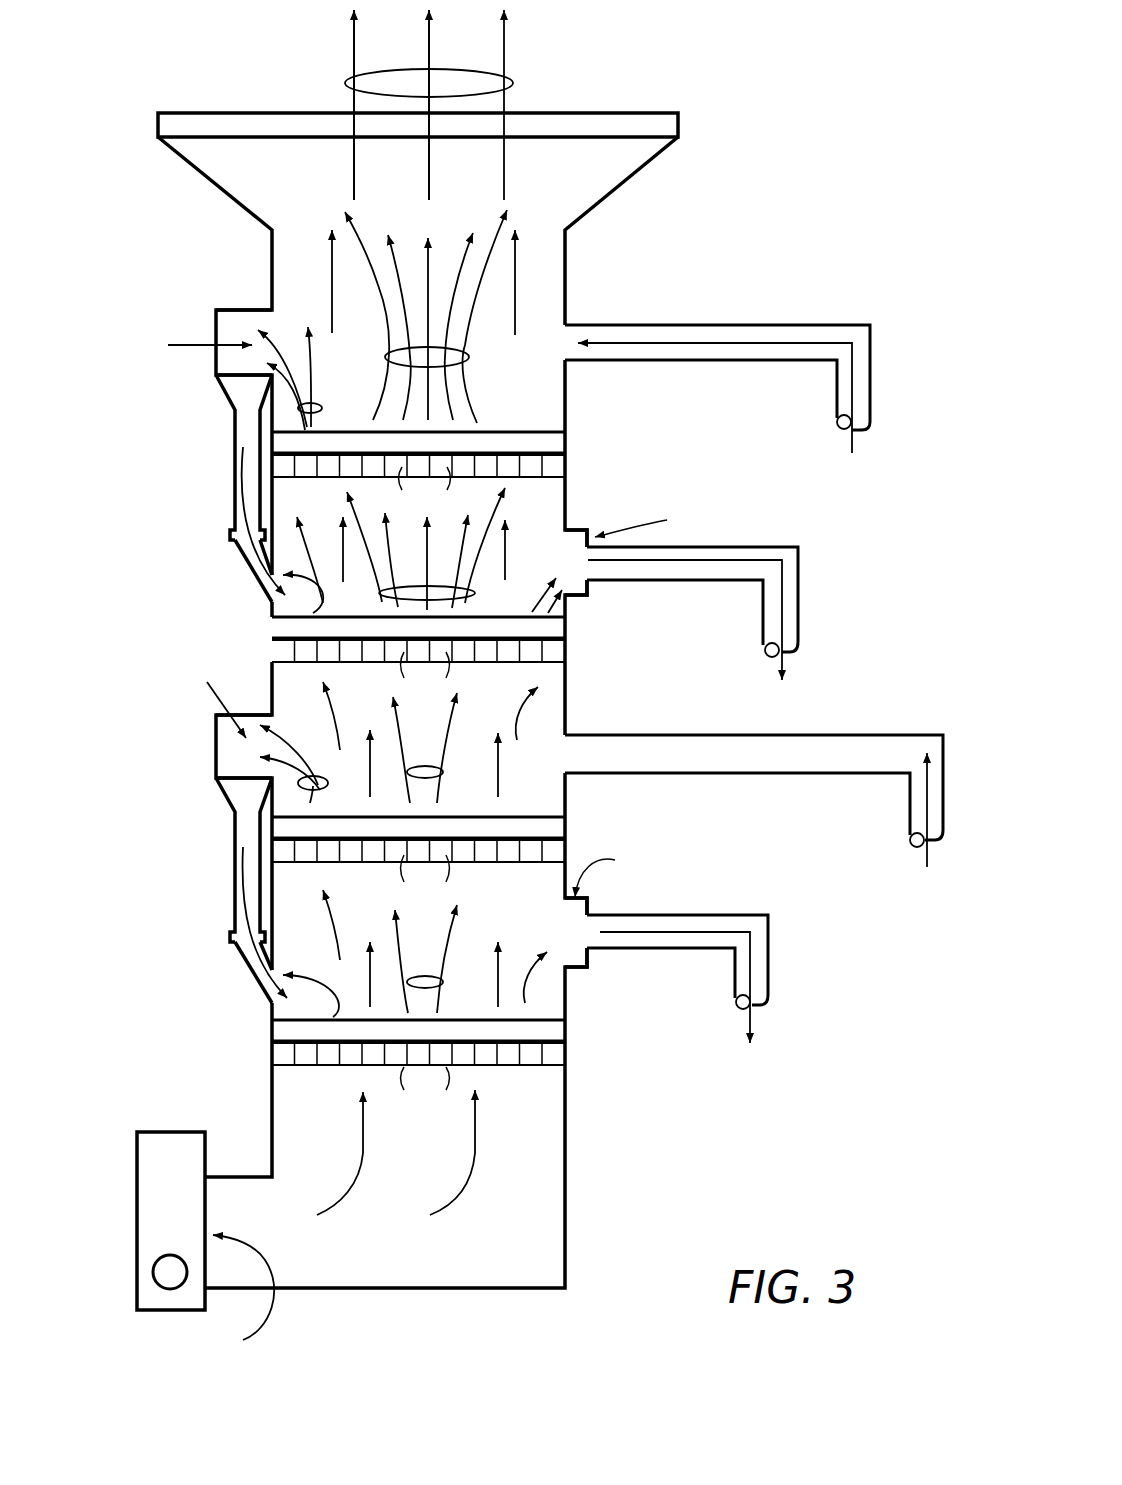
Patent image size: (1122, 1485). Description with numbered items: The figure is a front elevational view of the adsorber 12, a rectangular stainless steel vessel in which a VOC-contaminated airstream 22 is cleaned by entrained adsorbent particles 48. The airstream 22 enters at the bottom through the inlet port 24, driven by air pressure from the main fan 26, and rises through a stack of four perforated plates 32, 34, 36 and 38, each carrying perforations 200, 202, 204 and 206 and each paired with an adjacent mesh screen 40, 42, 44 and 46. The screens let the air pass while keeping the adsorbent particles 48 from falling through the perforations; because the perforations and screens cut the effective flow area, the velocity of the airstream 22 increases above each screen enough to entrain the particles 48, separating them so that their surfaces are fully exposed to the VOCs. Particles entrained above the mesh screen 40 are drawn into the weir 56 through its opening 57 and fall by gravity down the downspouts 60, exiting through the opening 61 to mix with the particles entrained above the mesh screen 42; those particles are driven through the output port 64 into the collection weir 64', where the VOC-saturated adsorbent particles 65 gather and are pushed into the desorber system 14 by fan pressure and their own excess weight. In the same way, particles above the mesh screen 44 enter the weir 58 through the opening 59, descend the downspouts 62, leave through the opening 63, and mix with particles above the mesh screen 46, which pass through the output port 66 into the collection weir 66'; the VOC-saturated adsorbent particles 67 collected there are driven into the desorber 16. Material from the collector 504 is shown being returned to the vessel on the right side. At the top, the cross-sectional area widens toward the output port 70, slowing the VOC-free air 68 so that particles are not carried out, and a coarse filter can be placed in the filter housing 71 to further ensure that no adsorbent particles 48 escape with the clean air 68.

The adsorber 12 is at (574, 260).
The VOC-contaminated airstream 22 is at (334, 308).
The inlet port 24 is at (243, 1296).
The main fan 26 is at (165, 1132).
The perforated plate 32 is at (545, 468).
The perforated plate 34 is at (548, 660).
The perforated plate 36 is at (557, 852).
The perforated plate 38 is at (560, 1055).
The mesh screen 40 is at (547, 432).
The mesh screen 42 is at (567, 612).
The mesh screen 44 is at (535, 817).
The mesh screen 46 is at (543, 1020).
The adsorbent particles 48 is at (322, 408).
The weir 56 is at (216, 322).
The opening 57 is at (193, 327).
The weir 58 is at (215, 748).
The opening 59 is at (212, 697).
The downspouts 60 is at (232, 478).
The opening 61 is at (307, 617).
The downspouts 62 is at (232, 878).
The opening 63 is at (320, 1021).
The output port 64 is at (614, 545).
The collection weir 64' is at (648, 523).
The VOC-saturated adsorbent particles 65 is at (780, 588).
The output port 66 is at (631, 921).
The collection weir 66' is at (613, 871).
The VOC-saturated adsorbent particles 67 is at (757, 957).
The VOC-free air 68 is at (513, 83).
The output port 70 is at (557, 113).
The filter housing 71 is at (657, 127).
The perforations 200 is at (425, 486).
The perforations 202 is at (425, 672).
The perforations 204 is at (425, 876).
The perforations 206 is at (425, 1089).
The collector 504 is at (770, 632).
The desorber system 14 is at (767, 639).
The desorber 16 is at (758, 1008).